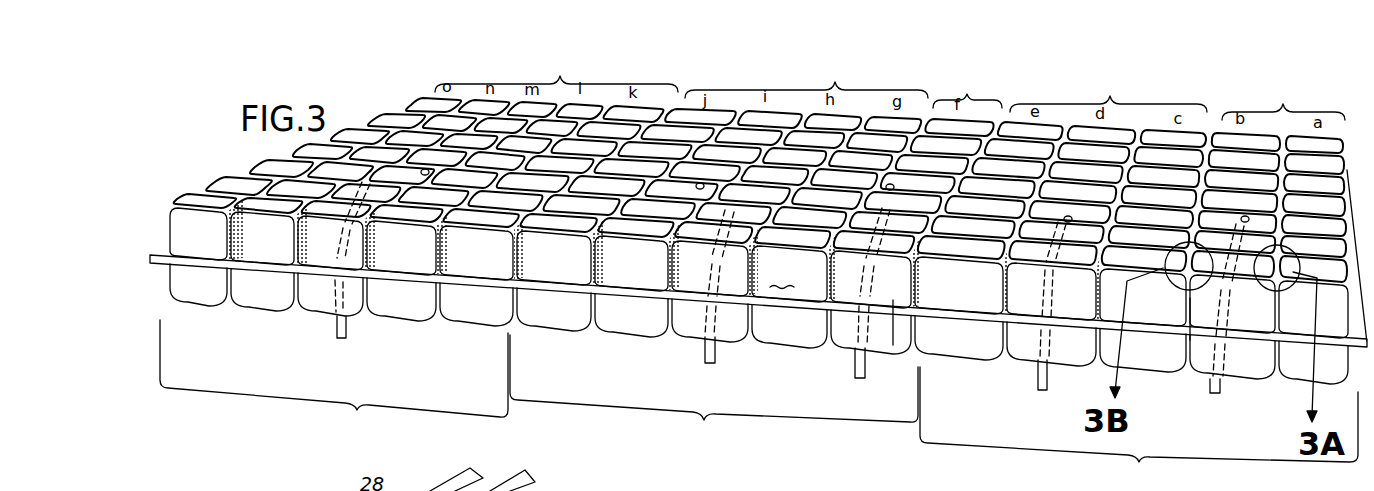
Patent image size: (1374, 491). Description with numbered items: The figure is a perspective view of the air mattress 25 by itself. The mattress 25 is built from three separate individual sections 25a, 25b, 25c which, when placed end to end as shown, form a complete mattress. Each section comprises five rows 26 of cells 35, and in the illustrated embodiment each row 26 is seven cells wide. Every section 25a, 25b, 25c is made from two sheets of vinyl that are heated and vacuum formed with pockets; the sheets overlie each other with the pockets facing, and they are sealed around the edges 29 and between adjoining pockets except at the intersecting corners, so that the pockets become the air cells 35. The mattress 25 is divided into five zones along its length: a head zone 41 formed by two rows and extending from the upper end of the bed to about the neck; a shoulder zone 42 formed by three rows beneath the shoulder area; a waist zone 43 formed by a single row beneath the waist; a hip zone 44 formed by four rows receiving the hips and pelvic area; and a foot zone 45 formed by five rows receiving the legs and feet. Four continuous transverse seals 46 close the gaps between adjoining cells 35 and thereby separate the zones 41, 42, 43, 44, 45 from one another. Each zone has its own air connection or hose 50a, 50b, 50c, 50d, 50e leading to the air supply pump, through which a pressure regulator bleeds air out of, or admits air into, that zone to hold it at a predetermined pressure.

The mattress 25 is at (350, 100).
The mattress section 25a is at (355, 418).
The mattress section 25b is at (700, 425).
The mattress section 25c is at (1137, 470).
The row 26 is at (207, 307).
The edges 29 is at (470, 327).
The cell 35 is at (780, 333).
The head zone 41 is at (1248, 100).
The shoulder zone 42 is at (1156, 104).
The waist zone 43 is at (996, 97).
The hip zone 44 is at (806, 84).
The foot zone 45 is at (610, 78).
The transverse seal 46 is at (893, 345).
The air connection or hose 50a is at (1222, 391).
The air connection or hose 50b is at (1038, 378).
The air connection or hose 50c is at (857, 366).
The air connection or hose 50d is at (703, 349).
The air connection or hose 50e is at (335, 333).